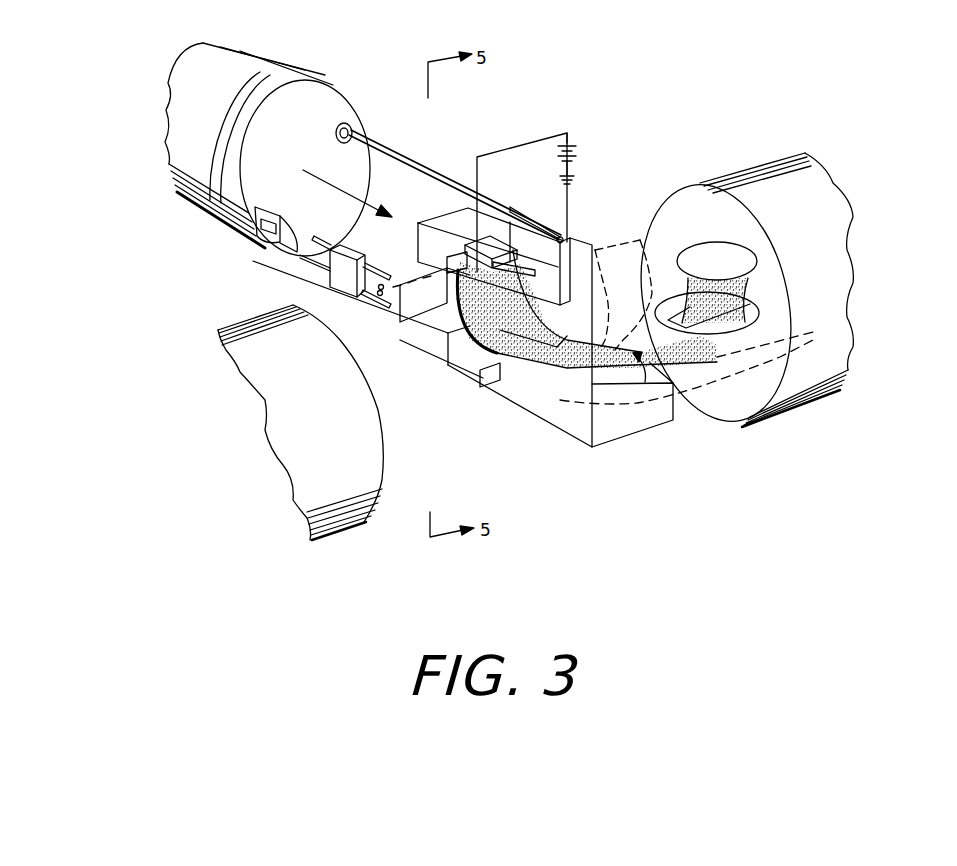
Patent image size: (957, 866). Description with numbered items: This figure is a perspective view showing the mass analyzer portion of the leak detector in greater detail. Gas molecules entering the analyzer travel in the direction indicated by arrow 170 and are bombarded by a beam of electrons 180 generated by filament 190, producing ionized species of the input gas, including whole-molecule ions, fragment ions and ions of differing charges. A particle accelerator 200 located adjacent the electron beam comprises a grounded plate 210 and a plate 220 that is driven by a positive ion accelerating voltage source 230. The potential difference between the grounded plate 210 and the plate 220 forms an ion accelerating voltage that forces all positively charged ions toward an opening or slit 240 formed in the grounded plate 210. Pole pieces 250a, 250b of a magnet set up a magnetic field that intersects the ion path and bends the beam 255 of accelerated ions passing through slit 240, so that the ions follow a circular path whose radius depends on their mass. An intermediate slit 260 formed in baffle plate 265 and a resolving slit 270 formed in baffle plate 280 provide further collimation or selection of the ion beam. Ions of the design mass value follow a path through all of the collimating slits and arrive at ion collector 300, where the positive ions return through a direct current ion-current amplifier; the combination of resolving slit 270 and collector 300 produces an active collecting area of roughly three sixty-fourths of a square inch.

The arrow 170 is at (319, 172).
The beam of electrons 180 is at (417, 278).
The filament 190 is at (386, 298).
The particle accelerator 200 is at (455, 235).
The grounded plate 210 is at (450, 292).
The plate 220 is at (494, 250).
The positive ion accelerating voltage source 230 is at (577, 150).
The slit 240 is at (457, 294).
The pole piece 250a is at (248, 335).
The pole piece 250b is at (682, 210).
The beam of accelerated ions 255 is at (654, 372).
The intermediate slit 260 is at (500, 356).
The baffle plate 265 is at (500, 385).
The resolving slit 270 is at (735, 310).
The baffle plate 280 is at (735, 322).
The ion collector 300 is at (728, 262).